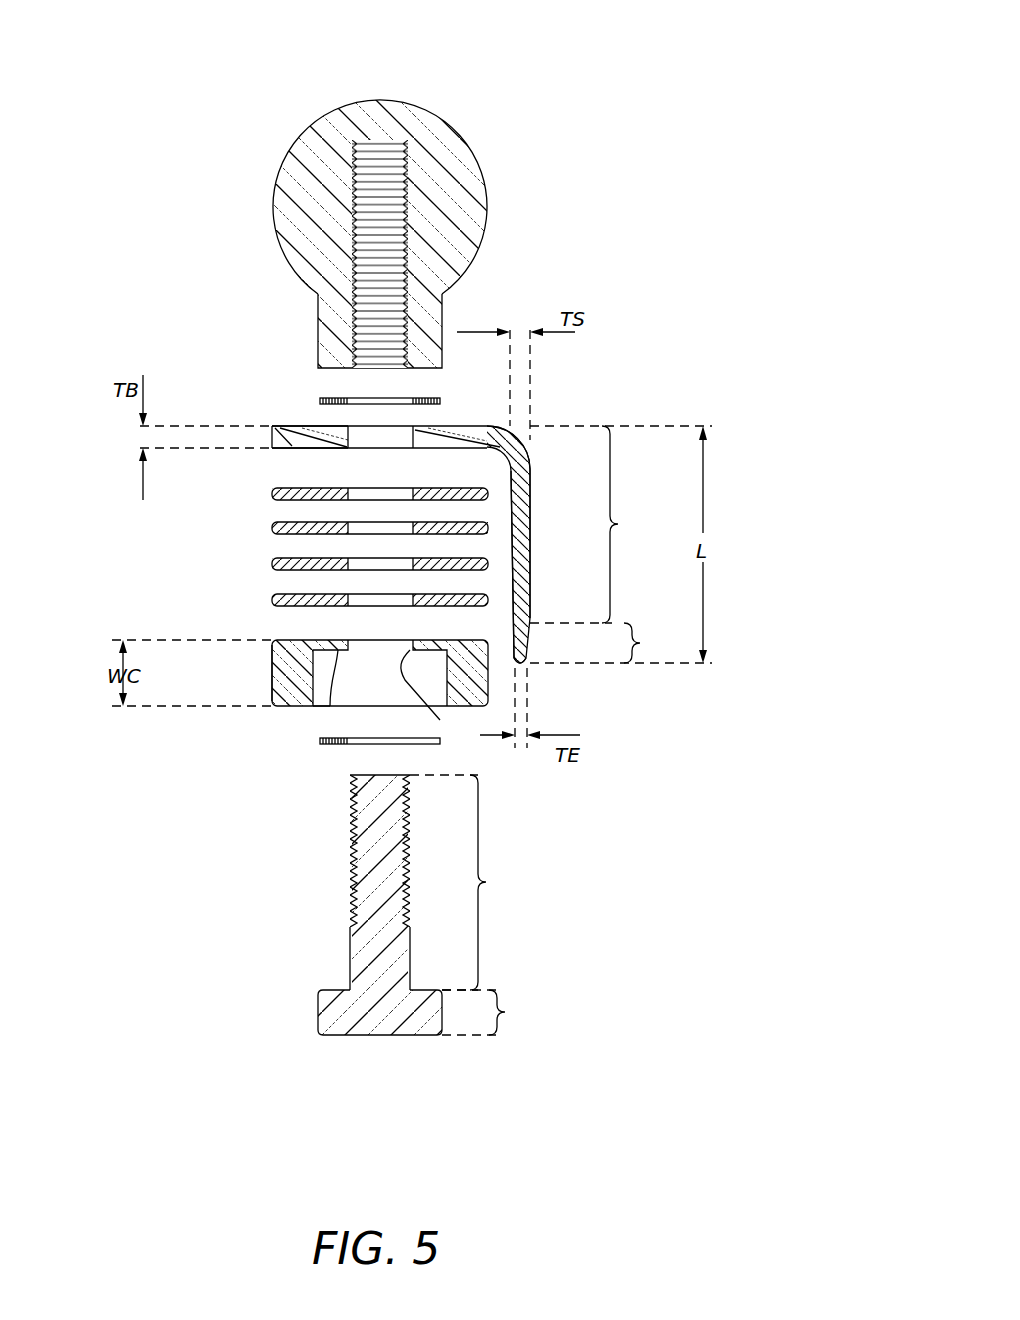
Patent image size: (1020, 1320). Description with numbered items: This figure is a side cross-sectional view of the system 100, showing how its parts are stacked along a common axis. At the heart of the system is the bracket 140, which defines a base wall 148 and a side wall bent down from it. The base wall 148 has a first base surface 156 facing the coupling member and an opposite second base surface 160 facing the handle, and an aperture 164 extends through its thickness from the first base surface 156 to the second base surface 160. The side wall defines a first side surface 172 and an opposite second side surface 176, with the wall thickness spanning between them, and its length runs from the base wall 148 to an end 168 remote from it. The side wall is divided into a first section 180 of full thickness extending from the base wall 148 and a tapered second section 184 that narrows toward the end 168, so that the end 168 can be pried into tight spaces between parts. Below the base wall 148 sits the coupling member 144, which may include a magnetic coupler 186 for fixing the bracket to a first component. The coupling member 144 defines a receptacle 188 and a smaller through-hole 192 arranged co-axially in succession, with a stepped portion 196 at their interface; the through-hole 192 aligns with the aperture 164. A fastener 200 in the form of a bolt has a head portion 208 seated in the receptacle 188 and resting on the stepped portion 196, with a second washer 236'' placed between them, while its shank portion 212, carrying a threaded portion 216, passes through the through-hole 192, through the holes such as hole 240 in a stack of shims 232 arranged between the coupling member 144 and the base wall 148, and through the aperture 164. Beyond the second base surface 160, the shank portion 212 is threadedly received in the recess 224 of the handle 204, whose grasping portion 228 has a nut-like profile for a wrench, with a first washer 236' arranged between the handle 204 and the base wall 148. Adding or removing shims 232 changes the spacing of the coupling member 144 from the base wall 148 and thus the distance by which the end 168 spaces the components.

The system 100 is at (528, 55).
The handle 204 is at (465, 140).
The recess 224 is at (360, 187).
The grasping portion 228 is at (318, 338).
The first washer 236' is at (412, 385).
The base wall 148 is at (297, 426).
The second base surface 160 is at (288, 426).
The bracket 140 is at (280, 455).
The first base surface 156 is at (403, 426).
The aperture 164 is at (455, 450).
The second side surface 176 is at (532, 486).
The first side surface 172 is at (506, 553).
The end 168 is at (520, 666).
The first section 180 is at (621, 524).
The second section 184 is at (621, 643).
The shims 232 is at (272, 600).
The hole 240 is at (348, 489).
The coupling member 144 is at (272, 650).
The magnetic coupler 186 is at (272, 690).
The receptacle 188 is at (312, 706).
The stepped portion 196 is at (313, 678).
The through-hole 192 is at (440, 720).
The second washer 236'' is at (361, 768).
The shank portion 212 is at (425, 905).
The threaded portion 216 is at (350, 866).
The fastener 200 is at (318, 1010).
The head portion 208 is at (495, 1012).